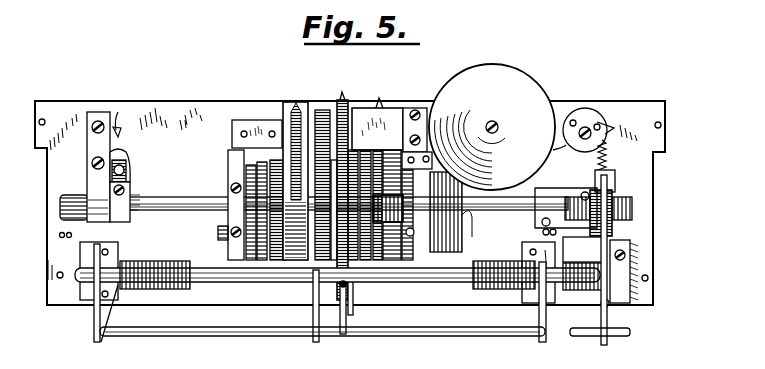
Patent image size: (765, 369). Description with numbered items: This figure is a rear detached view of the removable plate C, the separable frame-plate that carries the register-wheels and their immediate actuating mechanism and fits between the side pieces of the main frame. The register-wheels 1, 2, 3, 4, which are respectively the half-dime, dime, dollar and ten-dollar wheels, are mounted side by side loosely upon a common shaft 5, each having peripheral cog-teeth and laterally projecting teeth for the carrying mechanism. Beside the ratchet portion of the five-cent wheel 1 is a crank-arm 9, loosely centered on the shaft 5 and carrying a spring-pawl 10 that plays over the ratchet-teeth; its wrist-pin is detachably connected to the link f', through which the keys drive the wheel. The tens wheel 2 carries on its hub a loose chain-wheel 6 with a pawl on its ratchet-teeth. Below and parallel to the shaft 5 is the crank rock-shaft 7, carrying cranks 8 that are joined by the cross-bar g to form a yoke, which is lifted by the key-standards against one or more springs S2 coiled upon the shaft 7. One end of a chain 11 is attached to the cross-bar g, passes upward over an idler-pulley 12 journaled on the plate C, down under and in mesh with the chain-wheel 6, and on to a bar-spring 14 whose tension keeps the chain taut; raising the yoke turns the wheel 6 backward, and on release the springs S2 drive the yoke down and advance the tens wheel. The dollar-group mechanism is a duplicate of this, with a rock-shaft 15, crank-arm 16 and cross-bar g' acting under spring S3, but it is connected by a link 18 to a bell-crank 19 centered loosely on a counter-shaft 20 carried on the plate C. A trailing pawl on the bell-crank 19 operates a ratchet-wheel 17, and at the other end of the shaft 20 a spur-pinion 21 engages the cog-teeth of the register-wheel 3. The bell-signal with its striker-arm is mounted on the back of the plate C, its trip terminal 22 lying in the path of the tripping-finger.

The separable plate C is at (152, 124).
The common shaft 5 is at (165, 197).
The link f' is at (251, 149).
The crank-arm 9 is at (230, 232).
The spring-pawl 10 is at (228, 245).
The half-dime register-wheel 1 is at (270, 262).
The dime register-wheel 2 is at (300, 262).
The chain-wheel 6 is at (322, 262).
The chain 11 is at (345, 99).
The idler-pulley 12 is at (374, 106).
The dollar register-wheel 3 is at (362, 262).
The ten-dollar register-wheel 4 is at (384, 262).
The spur-pinion 21 is at (406, 262).
The trip terminal 22 is at (604, 124).
The ratchet-wheel 17 is at (616, 196).
The link 18 is at (610, 256).
The bell-crank 19 is at (588, 192).
The counter-shaft 20 is at (530, 213).
The rock-shaft 15 is at (583, 249).
The crank rock-shaft 7 is at (240, 275).
The spring S2 is at (140, 289).
The spring S3 is at (583, 283).
The crank 8 is at (93, 318).
The crank-arm 16 is at (608, 318).
The bar-spring 14 is at (348, 322).
The cross-bar g is at (322, 344).
The cross-bar g' is at (600, 345).